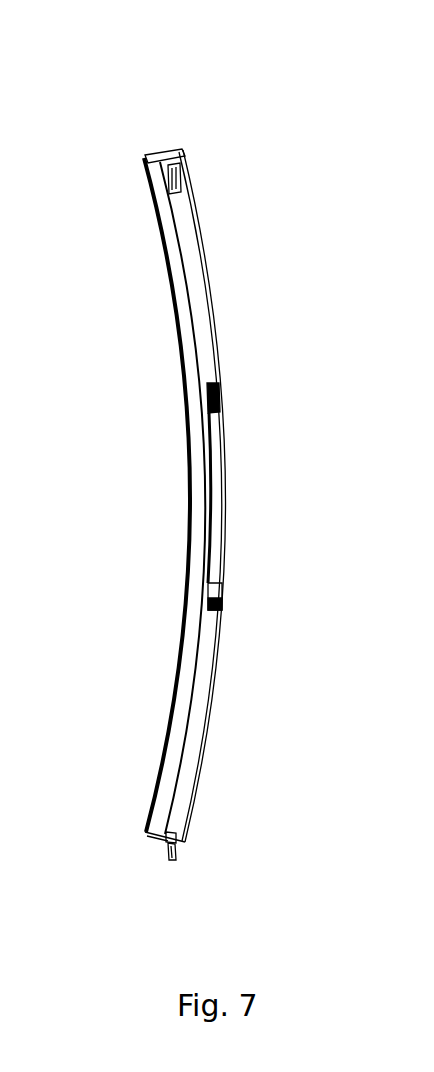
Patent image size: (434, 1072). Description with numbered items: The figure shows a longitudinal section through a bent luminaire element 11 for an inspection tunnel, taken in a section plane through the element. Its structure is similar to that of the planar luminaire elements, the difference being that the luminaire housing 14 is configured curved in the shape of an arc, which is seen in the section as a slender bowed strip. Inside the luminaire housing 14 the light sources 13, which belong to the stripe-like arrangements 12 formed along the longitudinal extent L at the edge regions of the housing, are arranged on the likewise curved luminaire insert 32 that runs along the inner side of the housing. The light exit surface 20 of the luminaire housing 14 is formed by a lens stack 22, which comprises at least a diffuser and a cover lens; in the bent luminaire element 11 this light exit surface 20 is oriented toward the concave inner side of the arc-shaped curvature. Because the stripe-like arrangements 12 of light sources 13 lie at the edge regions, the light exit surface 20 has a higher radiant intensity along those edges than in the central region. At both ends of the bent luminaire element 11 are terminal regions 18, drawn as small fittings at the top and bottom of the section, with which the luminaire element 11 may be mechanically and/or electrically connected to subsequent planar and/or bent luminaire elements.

The bent luminaire element 11 is at (163, 490).
The stripe-like arrangement 12 is at (127, 495).
The light source 13 is at (197, 640).
The luminaire housing 14 is at (211, 270).
The terminal region 18 is at (155, 154).
The light exit surface 20 is at (133, 498).
The lens stack 22 is at (176, 326).
The luminaire insert 32 is at (197, 688).
The longitudinal extent L is at (184, 750).